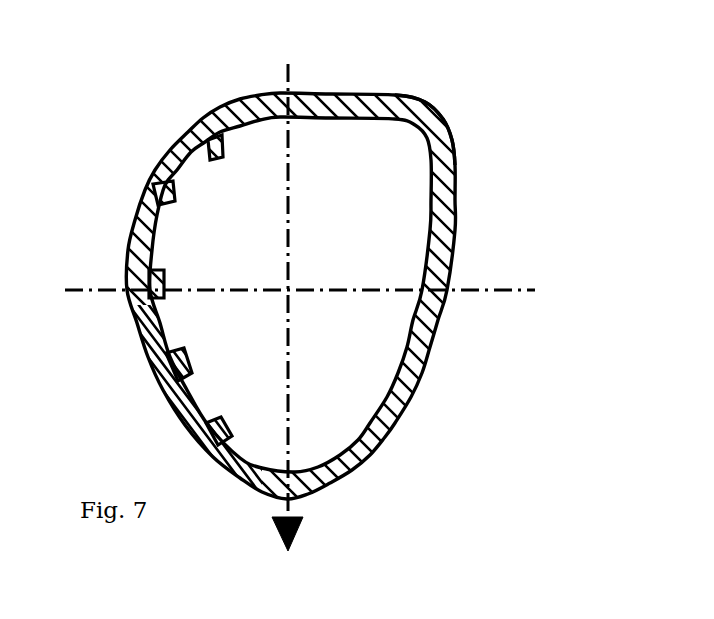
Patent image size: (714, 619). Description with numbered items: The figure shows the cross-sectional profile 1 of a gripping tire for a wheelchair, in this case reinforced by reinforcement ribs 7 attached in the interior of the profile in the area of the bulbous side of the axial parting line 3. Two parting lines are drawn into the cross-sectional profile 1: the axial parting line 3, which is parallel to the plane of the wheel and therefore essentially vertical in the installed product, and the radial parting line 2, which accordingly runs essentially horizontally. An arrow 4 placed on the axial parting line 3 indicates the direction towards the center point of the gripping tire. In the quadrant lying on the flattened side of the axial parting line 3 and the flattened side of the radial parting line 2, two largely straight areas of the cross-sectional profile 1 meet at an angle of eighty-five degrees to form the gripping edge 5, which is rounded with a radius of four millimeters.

The cross-sectional profile 1 is at (483, 203).
The radial parting line 2 is at (522, 292).
The axial parting line 3 is at (287, 72).
The direction towards the center point of the gripping tire 4 is at (282, 548).
The gripping edge 5 is at (450, 118).
The reinforcement ribs 7 is at (157, 272).